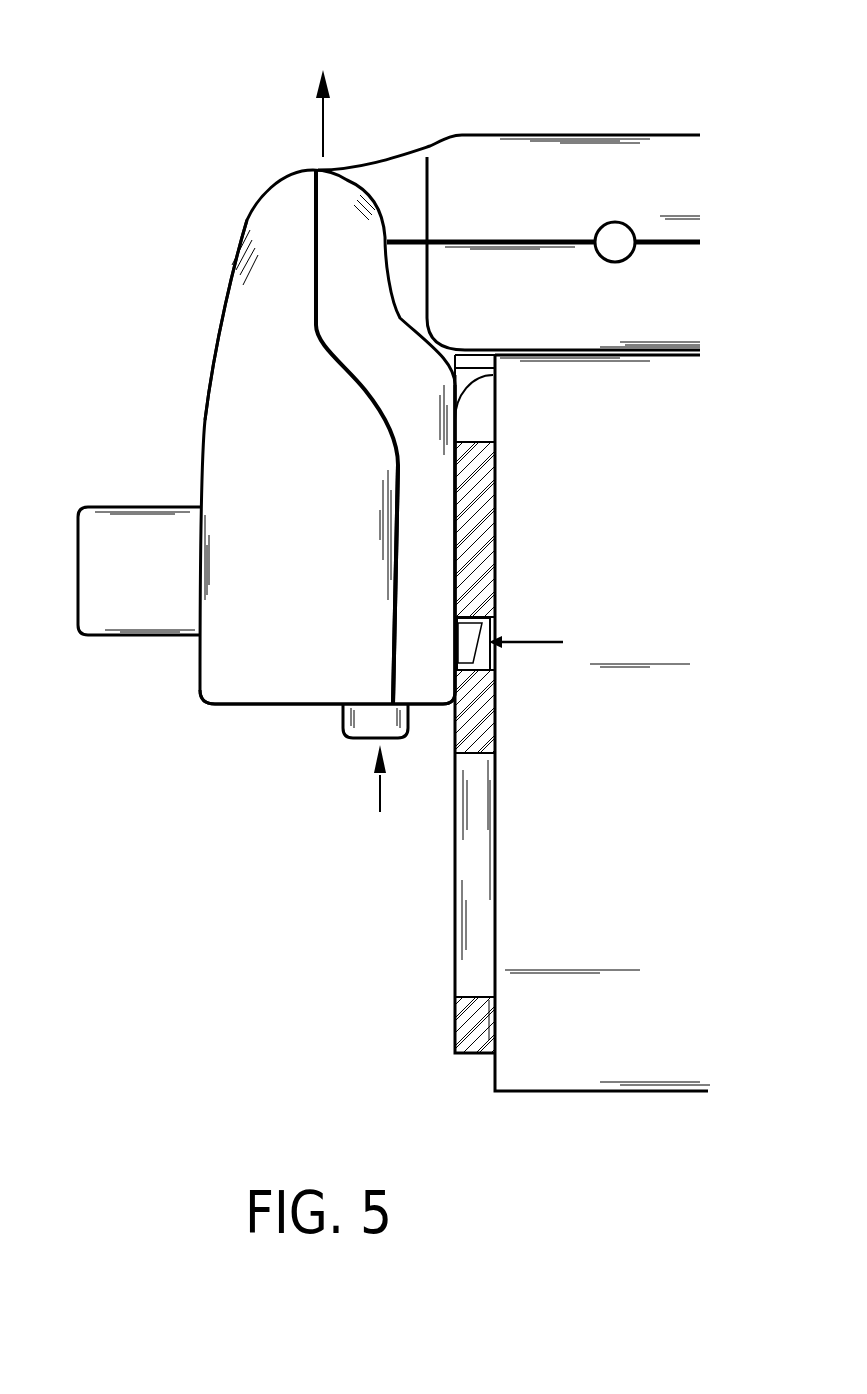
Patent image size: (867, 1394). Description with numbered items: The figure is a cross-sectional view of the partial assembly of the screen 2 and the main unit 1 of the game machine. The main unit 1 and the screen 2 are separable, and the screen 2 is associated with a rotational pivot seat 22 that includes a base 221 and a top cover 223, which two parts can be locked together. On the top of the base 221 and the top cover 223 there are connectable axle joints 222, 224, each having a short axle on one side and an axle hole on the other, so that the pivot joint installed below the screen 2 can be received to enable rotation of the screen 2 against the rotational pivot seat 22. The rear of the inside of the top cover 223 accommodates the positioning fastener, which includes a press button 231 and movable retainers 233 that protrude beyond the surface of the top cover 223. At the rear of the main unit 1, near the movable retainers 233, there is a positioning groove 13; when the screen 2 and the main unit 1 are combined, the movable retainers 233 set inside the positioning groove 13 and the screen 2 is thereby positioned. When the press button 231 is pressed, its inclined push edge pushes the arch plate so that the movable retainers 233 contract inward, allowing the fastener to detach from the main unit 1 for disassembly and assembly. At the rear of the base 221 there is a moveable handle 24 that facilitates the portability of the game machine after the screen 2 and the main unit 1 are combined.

The main unit 1 is at (635, 1068).
The screen 2 is at (615, 158).
The positioning groove 13 is at (483, 659).
The rotational pivot seat 22 is at (202, 410).
The moveable handle 24 is at (108, 528).
The base 221 is at (259, 685).
The axle joint 222 is at (247, 260).
The top cover 223 is at (428, 690).
The axle joint 224 is at (340, 193).
The press button 231 is at (343, 723).
The movable retainers 233 is at (475, 628).